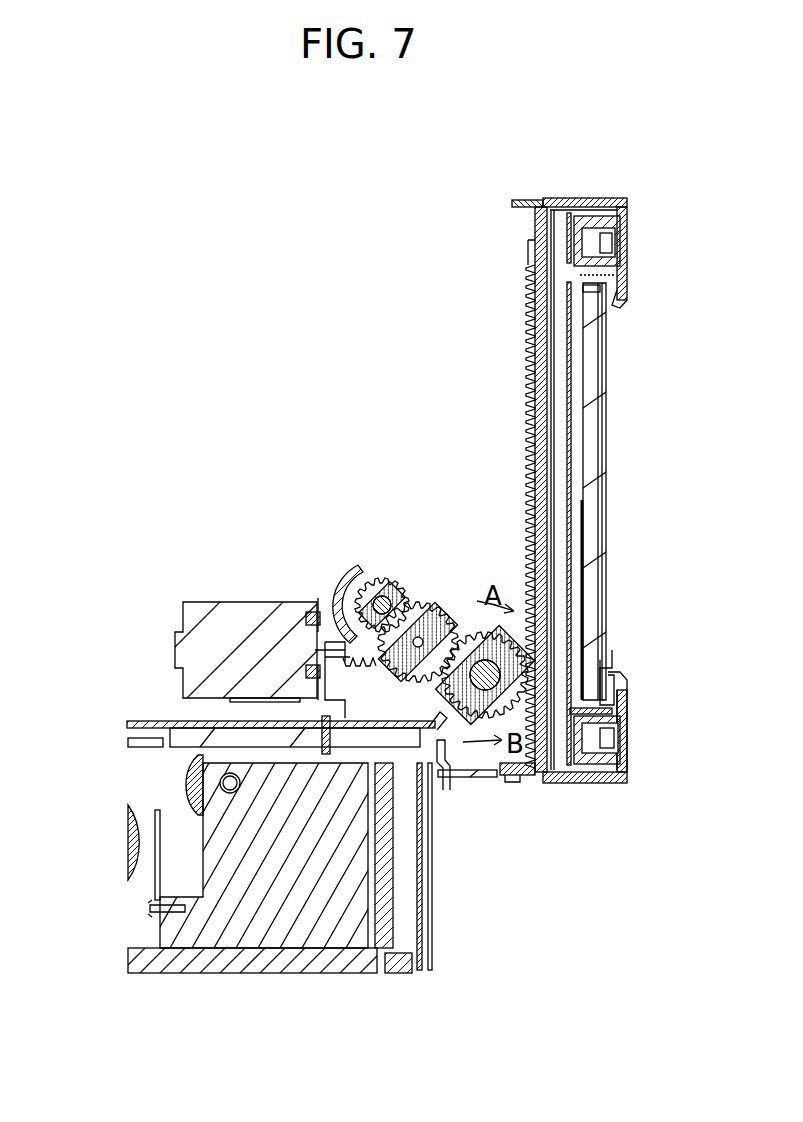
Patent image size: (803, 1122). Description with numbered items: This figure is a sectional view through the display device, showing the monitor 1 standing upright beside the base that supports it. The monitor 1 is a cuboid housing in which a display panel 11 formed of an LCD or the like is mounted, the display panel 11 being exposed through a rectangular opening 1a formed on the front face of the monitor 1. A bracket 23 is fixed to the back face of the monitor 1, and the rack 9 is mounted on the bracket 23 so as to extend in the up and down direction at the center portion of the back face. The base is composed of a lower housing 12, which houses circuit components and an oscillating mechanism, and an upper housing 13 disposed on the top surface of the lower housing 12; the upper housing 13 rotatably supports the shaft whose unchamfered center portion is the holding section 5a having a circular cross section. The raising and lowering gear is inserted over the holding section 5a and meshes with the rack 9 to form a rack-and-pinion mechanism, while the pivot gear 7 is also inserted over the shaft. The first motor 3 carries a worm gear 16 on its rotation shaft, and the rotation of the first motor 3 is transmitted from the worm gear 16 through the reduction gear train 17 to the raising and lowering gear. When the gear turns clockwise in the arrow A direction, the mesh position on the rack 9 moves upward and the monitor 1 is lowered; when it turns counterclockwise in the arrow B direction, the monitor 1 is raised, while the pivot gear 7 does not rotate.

The monitor 1 is at (622, 200).
The rectangular opening 1a is at (612, 667).
The first motor 3 is at (215, 625).
The holding section 5a is at (462, 702).
The pivot gear 7 is at (462, 626).
The rack 9 is at (530, 432).
The display panel 11 is at (598, 445).
The lower housing 12 is at (228, 963).
The upper housing 13 is at (125, 723).
The worm gear 16 is at (346, 614).
The reduction gear train 17 is at (418, 605).
The bracket 23 is at (511, 202).